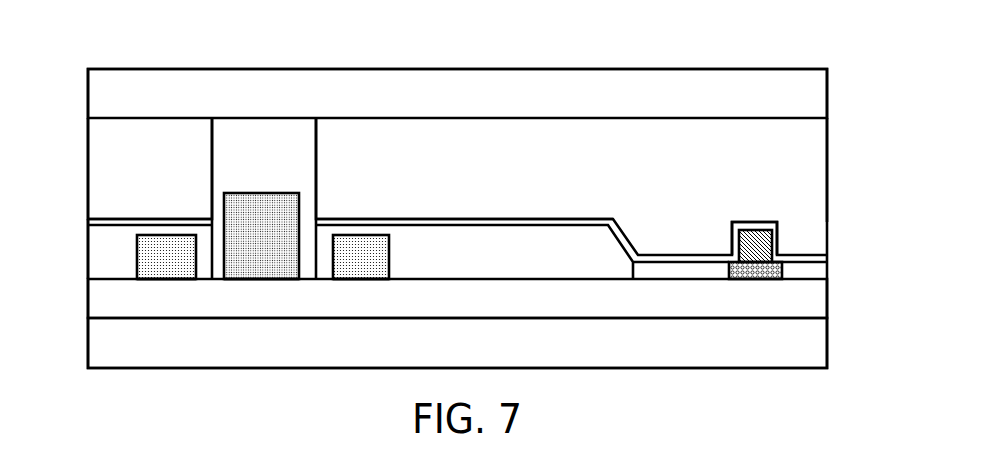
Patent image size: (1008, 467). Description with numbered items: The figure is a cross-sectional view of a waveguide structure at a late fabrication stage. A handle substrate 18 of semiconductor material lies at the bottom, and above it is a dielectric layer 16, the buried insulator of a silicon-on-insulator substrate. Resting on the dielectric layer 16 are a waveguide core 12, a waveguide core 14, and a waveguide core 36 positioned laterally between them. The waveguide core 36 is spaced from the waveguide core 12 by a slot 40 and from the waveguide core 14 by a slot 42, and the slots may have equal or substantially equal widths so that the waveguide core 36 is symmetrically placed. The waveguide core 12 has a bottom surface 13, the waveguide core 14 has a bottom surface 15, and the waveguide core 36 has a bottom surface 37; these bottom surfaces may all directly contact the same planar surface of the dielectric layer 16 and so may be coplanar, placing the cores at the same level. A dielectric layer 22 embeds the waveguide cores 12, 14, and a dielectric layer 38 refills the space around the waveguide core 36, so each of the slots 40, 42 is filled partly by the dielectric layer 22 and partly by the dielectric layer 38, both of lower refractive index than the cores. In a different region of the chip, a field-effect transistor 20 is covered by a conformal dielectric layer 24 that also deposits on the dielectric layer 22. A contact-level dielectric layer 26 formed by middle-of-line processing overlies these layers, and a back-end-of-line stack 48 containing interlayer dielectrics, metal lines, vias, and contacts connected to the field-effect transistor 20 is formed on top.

The waveguide core 12 is at (162, 250).
The bottom surface 13 is at (152, 280).
The waveguide core 14 is at (360, 257).
The bottom surface 15 is at (368, 280).
The dielectric layer 16 is at (158, 310).
The handle substrate 18 is at (157, 351).
The field-effect transistor 20 is at (792, 228).
The dielectric layer 22 is at (117, 265).
The dielectric layer 24 is at (790, 259).
The dielectric layer 26 is at (155, 155).
The waveguide core 36 is at (272, 203).
The bottom surface 37 is at (253, 280).
The dielectric layer 38 is at (283, 150).
The slot 40 is at (192, 50).
The slot 42 is at (297, 50).
The back-end-of-line stack 48 is at (153, 92).